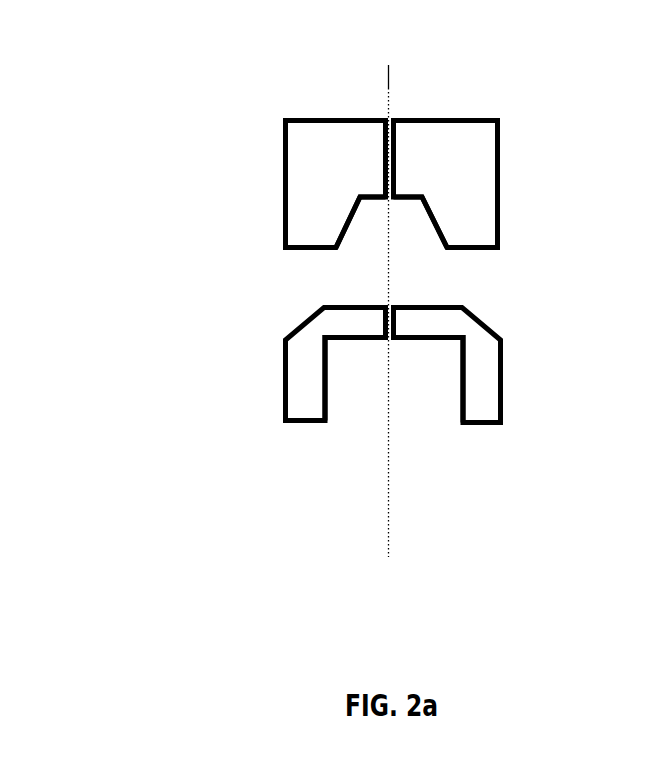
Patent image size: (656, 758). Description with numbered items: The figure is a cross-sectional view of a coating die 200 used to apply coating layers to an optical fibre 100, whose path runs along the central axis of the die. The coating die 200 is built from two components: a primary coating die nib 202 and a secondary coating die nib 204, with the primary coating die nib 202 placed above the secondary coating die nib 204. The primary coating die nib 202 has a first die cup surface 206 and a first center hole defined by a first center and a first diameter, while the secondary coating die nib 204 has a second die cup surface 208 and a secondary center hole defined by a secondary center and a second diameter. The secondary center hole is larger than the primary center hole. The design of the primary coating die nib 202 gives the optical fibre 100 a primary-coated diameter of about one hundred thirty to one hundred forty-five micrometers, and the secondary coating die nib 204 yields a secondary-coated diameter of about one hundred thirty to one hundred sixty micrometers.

The coating die 200 is at (60, 30).
The optical fibre 100 is at (394, 543).
The primary coating die nib 202 is at (500, 160).
The secondary coating die nib 204 is at (503, 393).
The first die cup surface 206 is at (386, 220).
The second die cup surface 208 is at (353, 398).